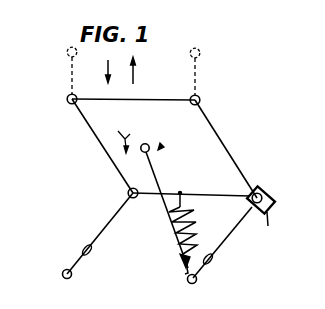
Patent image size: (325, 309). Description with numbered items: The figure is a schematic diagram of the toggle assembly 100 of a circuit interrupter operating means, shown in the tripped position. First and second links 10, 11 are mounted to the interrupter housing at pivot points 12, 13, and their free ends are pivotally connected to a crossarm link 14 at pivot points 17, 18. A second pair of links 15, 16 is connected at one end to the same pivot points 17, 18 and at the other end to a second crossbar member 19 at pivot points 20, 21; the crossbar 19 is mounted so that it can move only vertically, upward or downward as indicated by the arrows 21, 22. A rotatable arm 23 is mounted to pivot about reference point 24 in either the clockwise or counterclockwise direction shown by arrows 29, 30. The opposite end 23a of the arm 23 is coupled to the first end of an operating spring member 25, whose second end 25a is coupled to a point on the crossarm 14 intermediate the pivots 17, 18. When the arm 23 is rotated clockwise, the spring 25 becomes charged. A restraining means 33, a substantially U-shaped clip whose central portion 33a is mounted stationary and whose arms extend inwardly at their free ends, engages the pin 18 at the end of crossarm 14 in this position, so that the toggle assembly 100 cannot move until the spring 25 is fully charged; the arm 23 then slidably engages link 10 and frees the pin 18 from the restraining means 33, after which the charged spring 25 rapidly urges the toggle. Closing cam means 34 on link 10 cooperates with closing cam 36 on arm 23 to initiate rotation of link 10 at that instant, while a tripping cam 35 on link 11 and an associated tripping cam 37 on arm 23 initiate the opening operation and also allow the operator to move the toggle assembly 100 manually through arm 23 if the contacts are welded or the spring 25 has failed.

The toggle assembly 100 is at (239, 84).
The first link 10 is at (100, 231).
The second link 11 is at (228, 238).
The pivot point 12 is at (62, 275).
The pivot point 13 is at (197, 282).
The crossarm link 14 is at (218, 190).
The link 15 is at (101, 150).
The link 16 is at (217, 134).
The pivot point 17 is at (129, 195).
The pivot point 18 is at (272, 203).
The second crossbar member 19 is at (158, 98).
The pivot point 20 is at (67, 101).
The pivot point 21 is at (200, 100).
The arrow 22 is at (107, 68).
The rotatable arm 23 is at (151, 165).
The opposite end of arm 23a is at (185, 273).
The reference point 24 is at (147, 143).
The operating spring member 25 is at (198, 227).
The second end of spring 25a is at (180, 191).
The arrow 29 is at (115, 137).
The arrow 30 is at (167, 135).
The restraining means 33 is at (272, 196).
The central portion 33a is at (280, 226).
The closing cam means 34 is at (93, 252).
The tripping cam 35 is at (212, 261).
The closing cam 36 is at (180, 256).
The tripping cam 37 is at (190, 250).